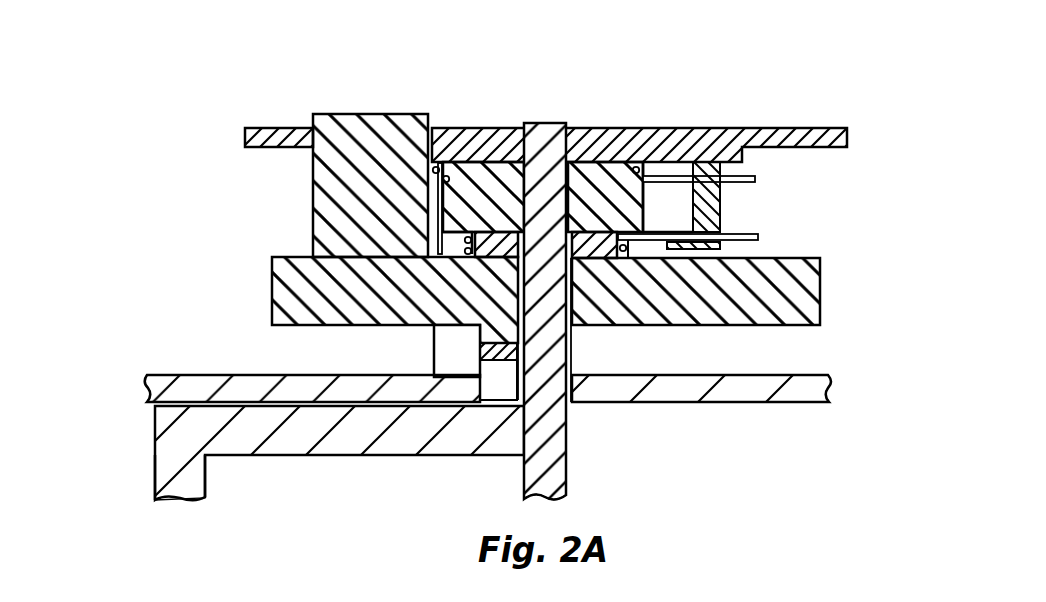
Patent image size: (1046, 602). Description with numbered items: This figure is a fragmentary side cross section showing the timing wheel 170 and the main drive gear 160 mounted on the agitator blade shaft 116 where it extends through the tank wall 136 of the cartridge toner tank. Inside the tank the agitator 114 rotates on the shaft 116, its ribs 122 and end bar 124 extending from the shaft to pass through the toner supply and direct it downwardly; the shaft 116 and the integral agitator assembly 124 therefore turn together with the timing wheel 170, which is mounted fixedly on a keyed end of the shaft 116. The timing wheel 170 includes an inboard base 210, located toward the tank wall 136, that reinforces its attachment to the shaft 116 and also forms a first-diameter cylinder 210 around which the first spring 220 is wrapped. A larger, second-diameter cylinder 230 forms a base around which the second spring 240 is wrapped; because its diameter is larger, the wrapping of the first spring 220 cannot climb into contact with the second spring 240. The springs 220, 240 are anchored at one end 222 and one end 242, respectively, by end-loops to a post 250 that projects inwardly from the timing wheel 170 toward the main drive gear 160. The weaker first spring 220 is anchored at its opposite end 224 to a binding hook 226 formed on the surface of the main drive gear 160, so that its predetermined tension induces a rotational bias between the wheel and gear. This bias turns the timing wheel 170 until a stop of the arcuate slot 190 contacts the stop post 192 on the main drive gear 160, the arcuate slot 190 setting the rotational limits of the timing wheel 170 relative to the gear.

The agitator 114 is at (306, 470).
The shaft 116 is at (550, 122).
The ribs 122 is at (357, 442).
The end bar 124 is at (167, 477).
The tank wall 136 is at (262, 380).
The main drive gear 160 is at (820, 292).
The timing wheel 170 is at (806, 101).
The arcuate slot 190 is at (447, 97).
The stop post 192 is at (353, 123).
The base 210 is at (613, 258).
The first spring 220 is at (646, 240).
The first spring end 222 is at (758, 237).
The opposite end of first spring 224 is at (440, 258).
The binding hook 226 is at (430, 245).
The second-diameter cylinder 230 is at (607, 168).
The second spring 240 is at (765, 168).
The second spring end 242 is at (757, 179).
The post 250 is at (720, 211).